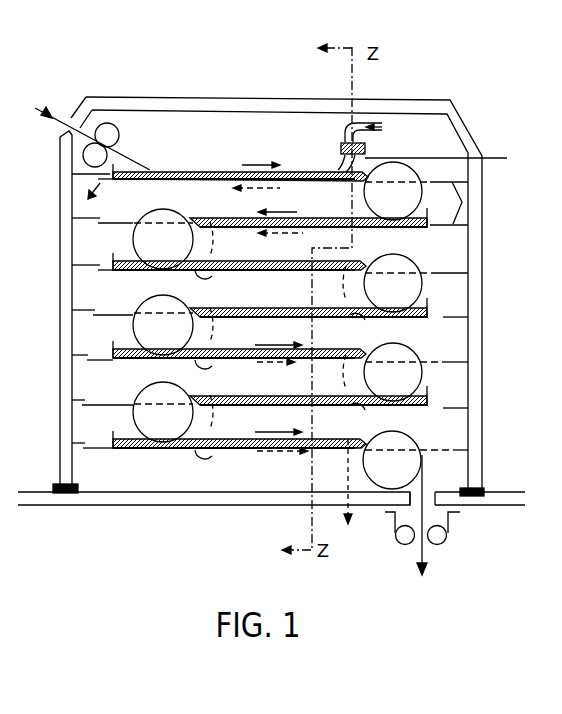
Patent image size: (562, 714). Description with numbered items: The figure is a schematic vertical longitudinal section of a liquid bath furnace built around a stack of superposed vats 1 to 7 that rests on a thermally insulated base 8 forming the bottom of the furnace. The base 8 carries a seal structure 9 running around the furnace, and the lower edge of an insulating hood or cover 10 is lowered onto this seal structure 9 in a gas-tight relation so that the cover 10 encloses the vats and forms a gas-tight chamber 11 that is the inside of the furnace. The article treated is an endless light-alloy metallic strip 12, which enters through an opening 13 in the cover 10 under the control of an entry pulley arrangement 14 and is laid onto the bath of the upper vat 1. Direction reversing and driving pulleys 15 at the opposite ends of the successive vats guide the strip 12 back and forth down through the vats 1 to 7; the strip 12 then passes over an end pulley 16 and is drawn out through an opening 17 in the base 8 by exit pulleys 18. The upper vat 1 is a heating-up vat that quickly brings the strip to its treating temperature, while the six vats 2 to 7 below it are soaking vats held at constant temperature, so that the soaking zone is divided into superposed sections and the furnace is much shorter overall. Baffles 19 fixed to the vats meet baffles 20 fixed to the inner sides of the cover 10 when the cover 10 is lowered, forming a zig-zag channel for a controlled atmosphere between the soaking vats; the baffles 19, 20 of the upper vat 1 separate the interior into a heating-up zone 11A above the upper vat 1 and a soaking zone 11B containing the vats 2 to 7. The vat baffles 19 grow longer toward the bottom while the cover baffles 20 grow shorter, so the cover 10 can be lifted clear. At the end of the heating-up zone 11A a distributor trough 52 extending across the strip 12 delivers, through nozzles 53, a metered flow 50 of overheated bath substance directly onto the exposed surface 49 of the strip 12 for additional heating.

The upper vat 1 is at (133, 181).
The soaking vat 2 is at (430, 225).
The soaking vat 3 is at (128, 274).
The soaking vat 4 is at (415, 318).
The soaking vat 5 is at (132, 360).
The soaking vat 6 is at (415, 407).
The soaking vat 7 is at (135, 448).
The thermally insulated base 8 is at (180, 503).
The seal structure 9 is at (68, 495).
The insulating hood or cover 10 is at (427, 108).
The gas tight chamber 11 is at (328, 243).
The heating up zone 11A is at (284, 139).
The soaking zone 11B is at (270, 290).
The metallic strip 12 is at (35, 108).
The opening 13 is at (80, 120).
The entry pulley arrangement 14 is at (112, 127).
The direction reversing and driving pulleys 15 is at (300, 302).
The end pulley 16 is at (415, 460).
The opening 17 is at (428, 494).
The exit pulleys 18 is at (438, 543).
The baffles 19 is at (437, 230).
The baffles 20 is at (462, 202).
The exposed surface 49 is at (195, 172).
The flow of overheated fluid 50 is at (337, 170).
The distributor trough 52 is at (365, 148).
The nozzles 53 is at (451, 157).